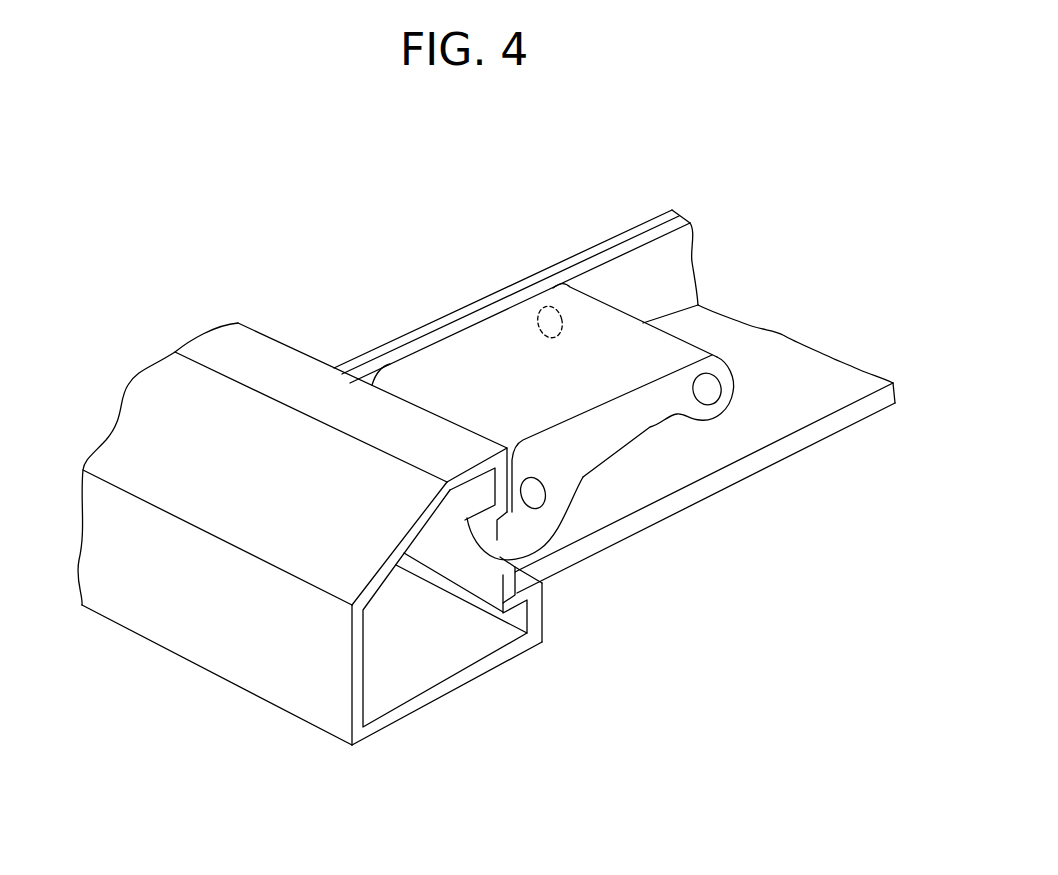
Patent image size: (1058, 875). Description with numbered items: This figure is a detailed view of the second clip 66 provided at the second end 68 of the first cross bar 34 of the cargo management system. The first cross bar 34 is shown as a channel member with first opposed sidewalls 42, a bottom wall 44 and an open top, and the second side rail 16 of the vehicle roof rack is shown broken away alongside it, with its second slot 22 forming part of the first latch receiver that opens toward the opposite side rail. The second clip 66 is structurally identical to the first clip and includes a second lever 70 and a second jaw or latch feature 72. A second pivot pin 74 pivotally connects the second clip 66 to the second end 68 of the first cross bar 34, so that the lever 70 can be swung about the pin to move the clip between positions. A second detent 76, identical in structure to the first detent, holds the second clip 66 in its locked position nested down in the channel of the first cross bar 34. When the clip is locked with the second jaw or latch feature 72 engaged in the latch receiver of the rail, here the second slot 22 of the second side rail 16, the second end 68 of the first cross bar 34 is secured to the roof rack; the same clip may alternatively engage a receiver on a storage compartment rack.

The second side rail 16 is at (207, 618).
The second slot 22 is at (497, 550).
The first cross bar 34 is at (838, 362).
The first opposed sidewalls 42 is at (672, 265).
The bottom wall 44 is at (773, 360).
The second clip 66 is at (540, 248).
The second end 68 is at (357, 357).
The second lever 70 is at (463, 353).
The second jaw or latch feature 72 is at (502, 525).
The second pivot pin 74 is at (535, 495).
The second detent 76 is at (540, 317).